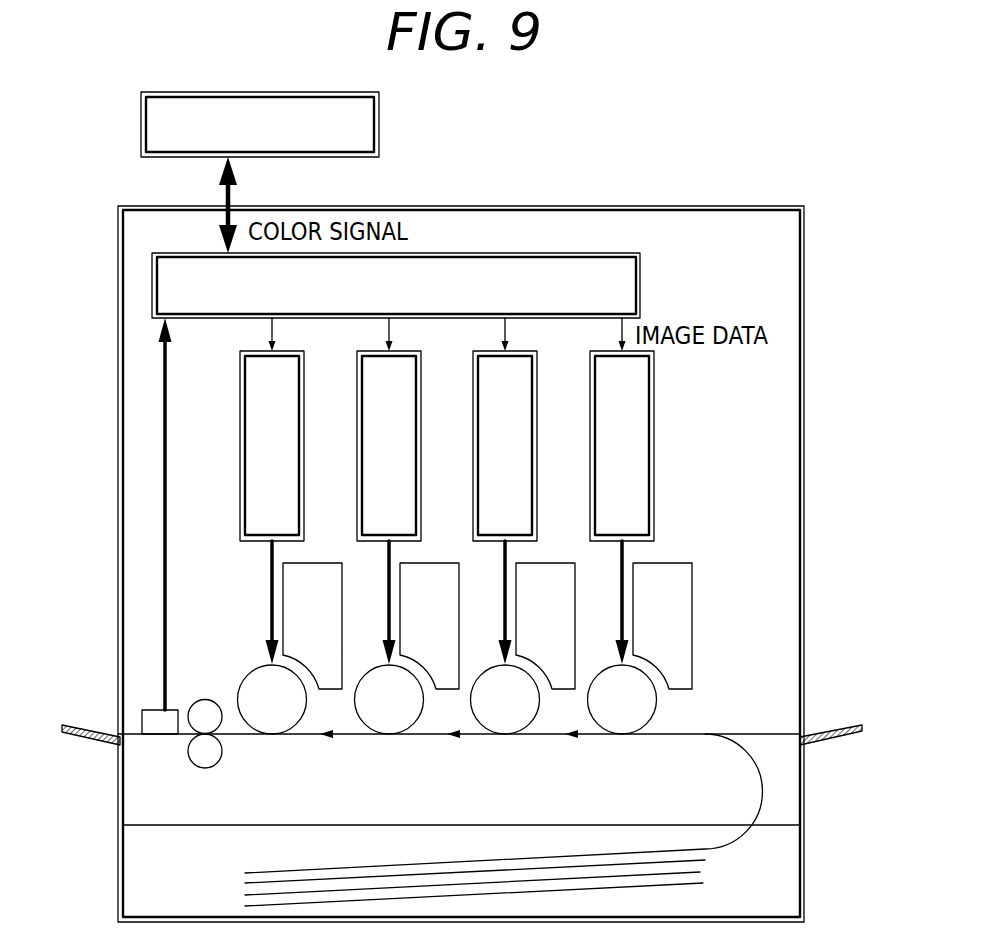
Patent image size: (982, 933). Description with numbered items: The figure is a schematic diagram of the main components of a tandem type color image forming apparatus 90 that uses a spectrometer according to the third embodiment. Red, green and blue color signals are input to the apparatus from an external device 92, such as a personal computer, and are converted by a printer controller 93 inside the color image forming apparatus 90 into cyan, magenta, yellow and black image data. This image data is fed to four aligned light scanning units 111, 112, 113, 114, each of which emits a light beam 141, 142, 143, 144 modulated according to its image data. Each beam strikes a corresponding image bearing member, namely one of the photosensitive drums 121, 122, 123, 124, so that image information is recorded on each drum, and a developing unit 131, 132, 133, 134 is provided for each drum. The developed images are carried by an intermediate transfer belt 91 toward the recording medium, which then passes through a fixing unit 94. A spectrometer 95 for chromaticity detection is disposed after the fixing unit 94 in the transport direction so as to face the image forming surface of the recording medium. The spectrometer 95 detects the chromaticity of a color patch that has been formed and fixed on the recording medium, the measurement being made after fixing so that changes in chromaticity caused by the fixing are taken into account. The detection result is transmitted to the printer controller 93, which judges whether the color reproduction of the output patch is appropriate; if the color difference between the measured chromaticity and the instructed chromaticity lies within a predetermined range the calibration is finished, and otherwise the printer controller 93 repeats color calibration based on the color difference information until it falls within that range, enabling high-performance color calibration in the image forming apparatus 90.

The color image forming apparatus 90 is at (728, 206).
The intermediate transfer belt 91 is at (738, 745).
The external device 92 is at (379, 122).
The printer controller 93 is at (640, 280).
The fixing unit 94 is at (205, 766).
The spectrometer 95 is at (155, 710).
The light scanning unit 111 is at (247, 428).
The light scanning unit 112 is at (364, 428).
The light scanning unit 113 is at (480, 428).
The light scanning unit 114 is at (597, 428).
The photosensitive drum 121 is at (273, 722).
The photosensitive drum 122 is at (390, 722).
The photosensitive drum 123 is at (506, 722).
The photosensitive drum 124 is at (623, 722).
The developing unit 131 is at (326, 573).
The developing unit 132 is at (443, 573).
The developing unit 133 is at (559, 573).
The developing unit 134 is at (682, 573).
The light beam 141 is at (268, 588).
The light beam 142 is at (385, 567).
The light beam 143 is at (502, 566).
The light beam 144 is at (618, 566).